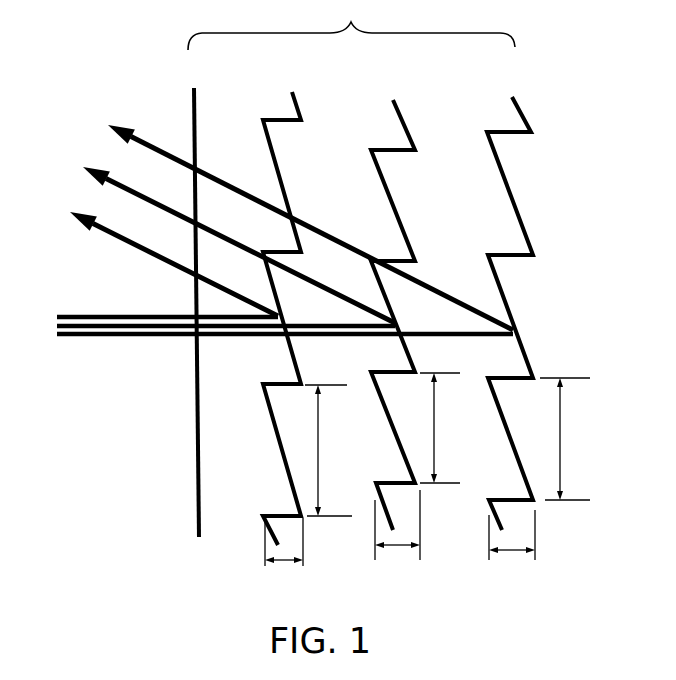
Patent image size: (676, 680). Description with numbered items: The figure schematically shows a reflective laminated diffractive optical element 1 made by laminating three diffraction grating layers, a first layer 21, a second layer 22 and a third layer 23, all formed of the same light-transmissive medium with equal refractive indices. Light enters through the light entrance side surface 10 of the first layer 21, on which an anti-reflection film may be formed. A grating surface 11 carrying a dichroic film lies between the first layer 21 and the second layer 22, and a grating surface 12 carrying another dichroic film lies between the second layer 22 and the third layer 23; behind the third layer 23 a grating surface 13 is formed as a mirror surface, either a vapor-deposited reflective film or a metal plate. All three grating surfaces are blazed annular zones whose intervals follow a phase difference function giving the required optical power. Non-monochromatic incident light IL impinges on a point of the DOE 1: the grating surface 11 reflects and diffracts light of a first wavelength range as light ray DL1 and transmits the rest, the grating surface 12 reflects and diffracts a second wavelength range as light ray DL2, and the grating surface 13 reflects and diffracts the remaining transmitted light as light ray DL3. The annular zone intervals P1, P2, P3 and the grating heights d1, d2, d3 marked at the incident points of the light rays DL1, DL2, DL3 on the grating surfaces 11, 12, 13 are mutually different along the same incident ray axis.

The reflective laminated diffractive optical element 1 is at (351, 25).
The light entrance side surface 10 is at (196, 108).
The grating surface 11 is at (280, 118).
The grating surface 12 is at (399, 114).
The grating surface 13 is at (522, 118).
The first layer 21 is at (239, 155).
The second layer 22 is at (337, 185).
The third layer 23 is at (444, 196).
The incident light IL is at (269, 347).
The light ray reflected and diffracted at grating surface 11 DL1 is at (152, 259).
The light ray reflected and diffracted at grating surface 12 DL2 is at (215, 236).
The light ray reflected and diffracted at grating surface 13 DL3 is at (285, 217).
The annular zone interval P1 is at (328, 450).
The annular zone interval P2 is at (445, 428).
The annular zone interval P3 is at (568, 439).
The grating height d1 is at (284, 555).
The grating height d2 is at (397, 536).
The grating height d3 is at (512, 548).